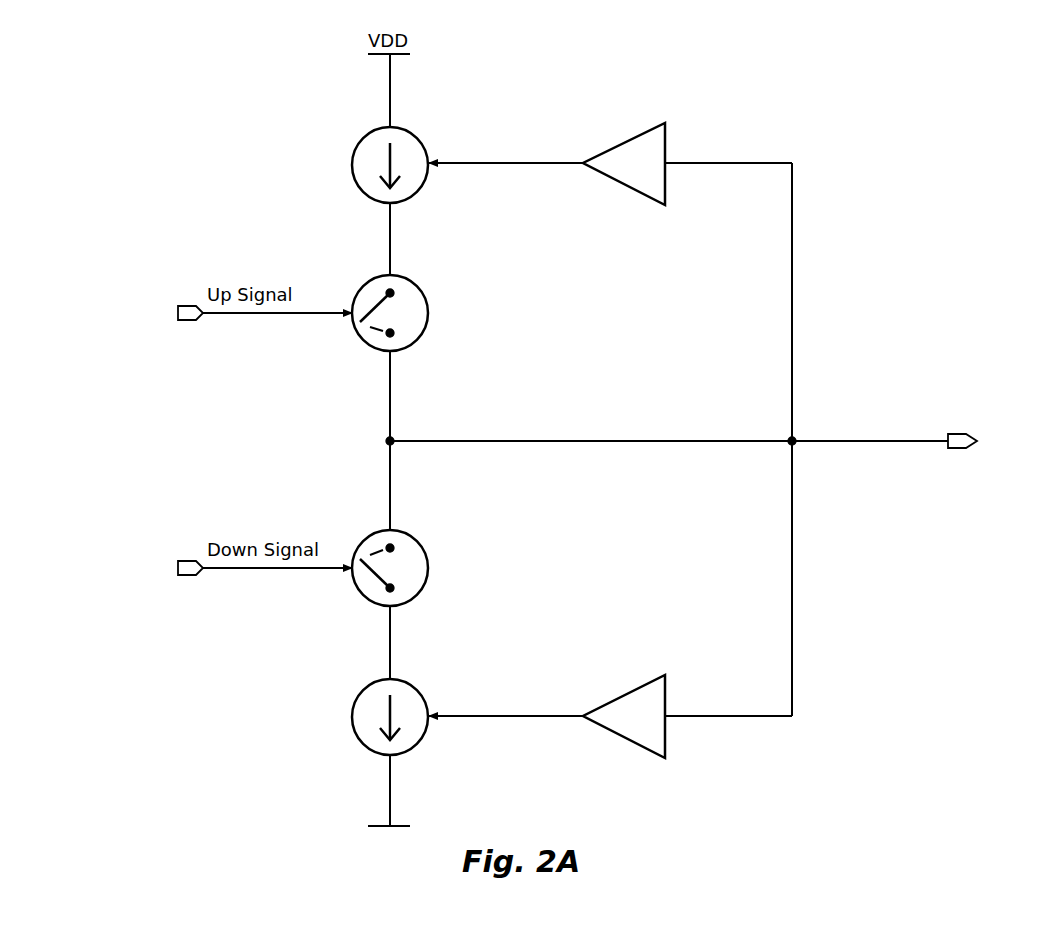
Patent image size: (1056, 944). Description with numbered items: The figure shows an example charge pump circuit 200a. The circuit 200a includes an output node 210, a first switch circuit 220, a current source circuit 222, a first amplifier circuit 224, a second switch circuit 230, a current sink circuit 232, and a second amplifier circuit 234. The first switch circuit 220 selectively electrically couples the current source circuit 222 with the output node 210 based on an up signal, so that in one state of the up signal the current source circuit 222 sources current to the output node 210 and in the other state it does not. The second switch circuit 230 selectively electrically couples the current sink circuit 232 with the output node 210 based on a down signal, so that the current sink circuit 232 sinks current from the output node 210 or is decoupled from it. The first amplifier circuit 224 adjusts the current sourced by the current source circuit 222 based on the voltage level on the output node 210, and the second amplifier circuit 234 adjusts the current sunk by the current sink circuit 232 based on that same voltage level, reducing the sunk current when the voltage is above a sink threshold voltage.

The charge pump circuit 200a is at (925, 85).
The output node 210 is at (795, 438).
The first switch circuit 220 is at (428, 300).
The current source circuit 222 is at (352, 152).
The first amplifier circuit 224 is at (547, 164).
The second switch circuit 230 is at (428, 555).
The current sink circuit 232 is at (352, 703).
The second amplifier circuit 234 is at (547, 716).